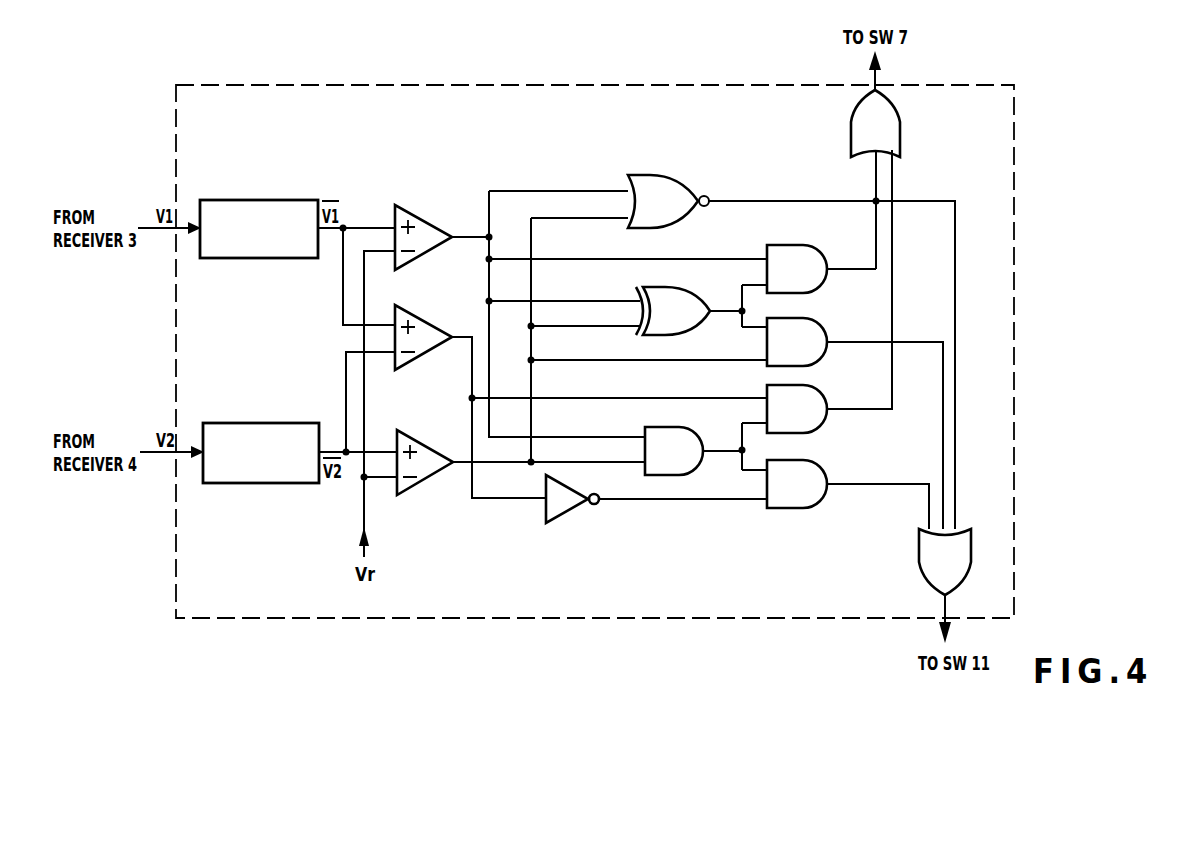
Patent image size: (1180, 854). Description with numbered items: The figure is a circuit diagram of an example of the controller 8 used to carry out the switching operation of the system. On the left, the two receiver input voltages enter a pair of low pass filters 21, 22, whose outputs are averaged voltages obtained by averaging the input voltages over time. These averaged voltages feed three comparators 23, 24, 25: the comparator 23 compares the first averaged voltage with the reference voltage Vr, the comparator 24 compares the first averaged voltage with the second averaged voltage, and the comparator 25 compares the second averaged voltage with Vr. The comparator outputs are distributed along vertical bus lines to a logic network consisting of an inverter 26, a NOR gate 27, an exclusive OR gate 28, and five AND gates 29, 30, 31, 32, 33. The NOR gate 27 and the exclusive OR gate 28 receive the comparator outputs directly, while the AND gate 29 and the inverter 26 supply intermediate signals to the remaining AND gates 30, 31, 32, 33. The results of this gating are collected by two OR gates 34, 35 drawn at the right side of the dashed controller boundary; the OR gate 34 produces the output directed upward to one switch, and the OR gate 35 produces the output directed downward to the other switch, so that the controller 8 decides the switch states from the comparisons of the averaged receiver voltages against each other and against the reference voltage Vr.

The controller 8 is at (381, 85).
The low pass filter 21 is at (300, 200).
The low pass filter 22 is at (300, 423).
The comparator 23 is at (435, 226).
The comparator 24 is at (435, 328).
The comparator 25 is at (435, 450).
The inverter 26 is at (567, 512).
The NOR gate 27 is at (684, 186).
The exclusive OR gate 28 is at (684, 297).
The AND gate 29 is at (686, 434).
The AND gate 30 is at (816, 254).
The AND gate 31 is at (820, 328).
The AND gate 32 is at (820, 396).
The AND gate 33 is at (820, 466).
The OR gate 34 is at (900, 126).
The OR gate 35 is at (921, 565).